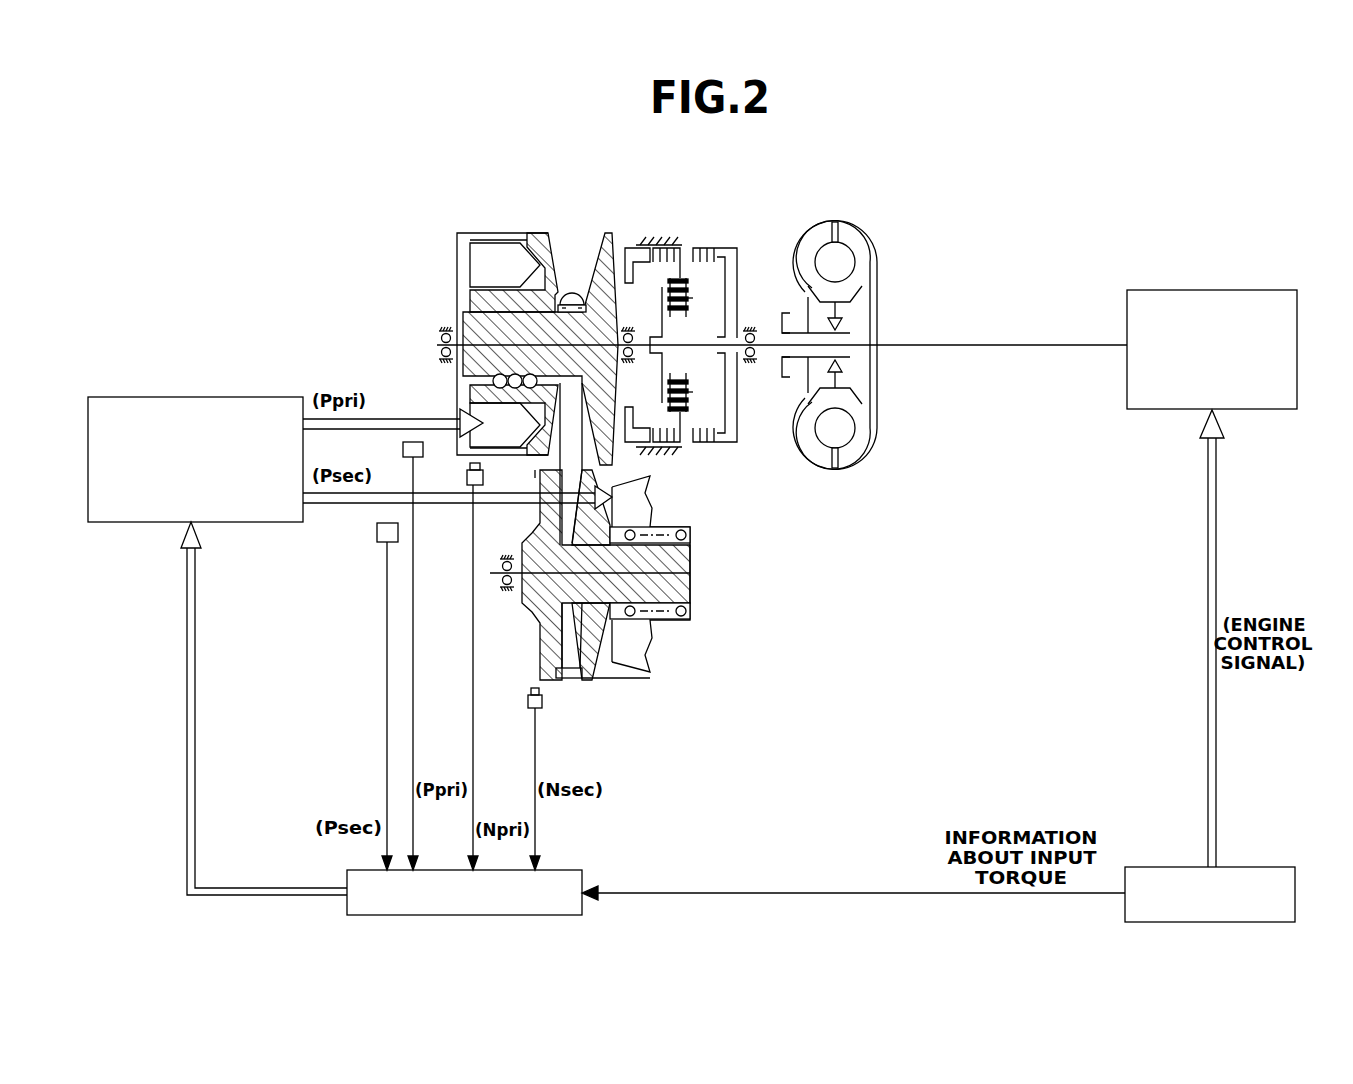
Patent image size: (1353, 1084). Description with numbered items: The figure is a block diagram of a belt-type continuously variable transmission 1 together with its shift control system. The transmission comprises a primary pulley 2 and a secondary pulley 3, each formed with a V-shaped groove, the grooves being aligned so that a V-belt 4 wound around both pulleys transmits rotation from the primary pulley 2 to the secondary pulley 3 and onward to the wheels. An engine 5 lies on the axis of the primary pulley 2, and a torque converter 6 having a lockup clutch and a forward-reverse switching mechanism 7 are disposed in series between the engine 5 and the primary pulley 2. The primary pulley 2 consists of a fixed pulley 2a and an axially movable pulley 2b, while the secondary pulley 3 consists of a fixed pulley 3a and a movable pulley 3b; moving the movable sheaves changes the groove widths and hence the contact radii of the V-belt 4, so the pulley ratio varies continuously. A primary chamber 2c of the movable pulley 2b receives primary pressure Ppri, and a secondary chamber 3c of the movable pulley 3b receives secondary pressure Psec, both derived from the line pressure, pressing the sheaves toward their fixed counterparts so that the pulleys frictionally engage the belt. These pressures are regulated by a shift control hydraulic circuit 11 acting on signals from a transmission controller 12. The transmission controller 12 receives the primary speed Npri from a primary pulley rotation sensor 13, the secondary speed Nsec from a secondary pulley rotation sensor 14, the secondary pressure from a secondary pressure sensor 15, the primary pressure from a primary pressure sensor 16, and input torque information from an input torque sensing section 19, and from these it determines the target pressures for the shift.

The belt-type continuously variable transmission 1 is at (478, 226).
The primary pulley 2 is at (596, 232).
The fixed pulley 2a is at (610, 237).
The movable pulley 2b is at (548, 242).
The primary chamber 2c is at (480, 268).
The secondary pulley 3 is at (666, 690).
The fixed pulley 3a is at (540, 632).
The movable pulley 3b is at (592, 690).
The secondary chamber 3c is at (618, 672).
The V-belt 4 is at (573, 292).
The engine 5 is at (1216, 290).
The torque converter 6 is at (908, 232).
The forward-reverse switching mechanism 7 is at (642, 228).
The shift control hydraulic circuit 11 is at (127, 397).
The transmission controller 12 is at (578, 868).
The primary pulley rotation sensor 13 is at (467, 478).
The secondary pulley rotation sensor 14 is at (528, 702).
The secondary pressure sensor 15 is at (377, 533).
The primary pressure sensor 16 is at (403, 450).
The input torque sensing section 19 is at (1263, 866).